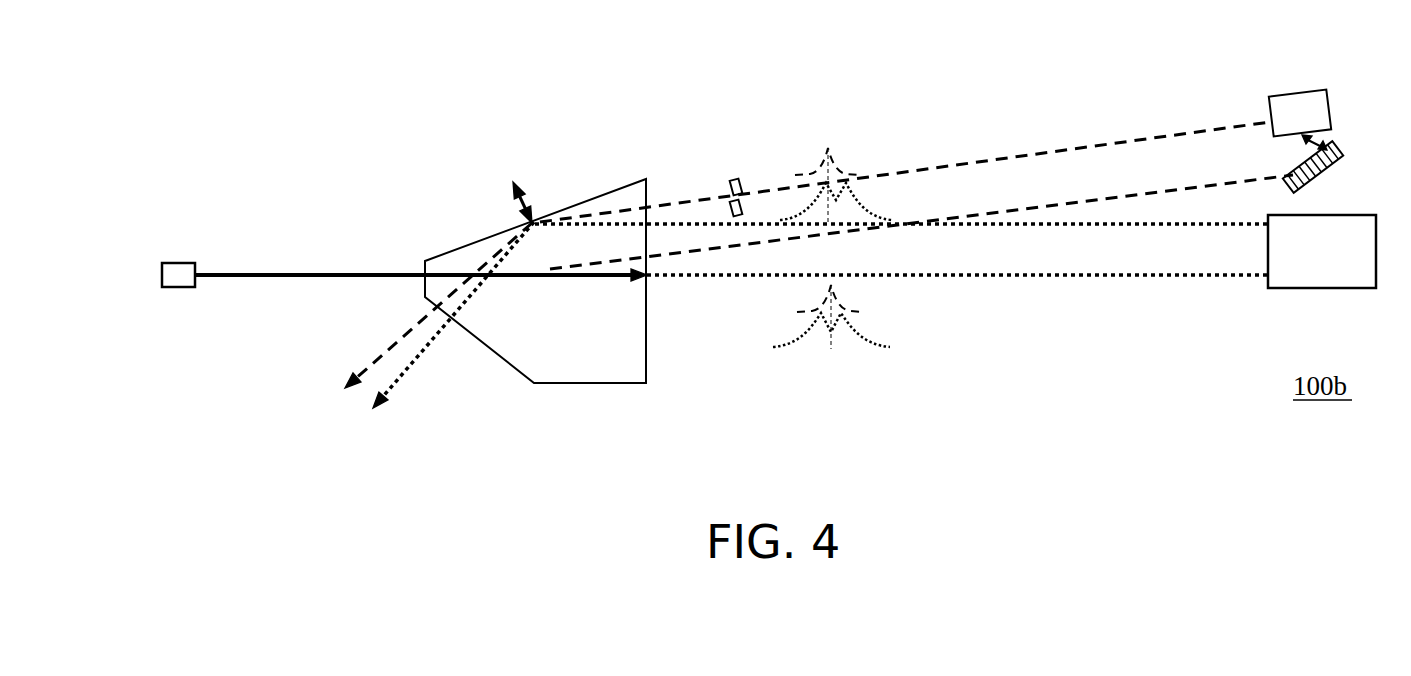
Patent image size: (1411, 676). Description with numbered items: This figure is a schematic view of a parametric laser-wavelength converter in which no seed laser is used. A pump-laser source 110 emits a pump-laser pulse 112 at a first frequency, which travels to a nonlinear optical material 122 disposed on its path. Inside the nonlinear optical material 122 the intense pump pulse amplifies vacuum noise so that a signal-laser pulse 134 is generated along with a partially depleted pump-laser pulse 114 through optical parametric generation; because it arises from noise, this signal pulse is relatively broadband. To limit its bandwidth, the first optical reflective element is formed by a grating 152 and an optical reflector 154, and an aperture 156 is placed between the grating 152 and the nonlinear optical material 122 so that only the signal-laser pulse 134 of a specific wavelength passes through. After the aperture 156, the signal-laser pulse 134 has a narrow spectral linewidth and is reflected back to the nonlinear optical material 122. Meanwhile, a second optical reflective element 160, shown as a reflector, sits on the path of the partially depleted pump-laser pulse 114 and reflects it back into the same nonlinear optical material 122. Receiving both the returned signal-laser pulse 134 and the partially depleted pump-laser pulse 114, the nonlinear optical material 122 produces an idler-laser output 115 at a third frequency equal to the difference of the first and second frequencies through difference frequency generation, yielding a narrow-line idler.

The pump-laser source 110 is at (162, 271).
The pump-laser pulse 112 is at (220, 272).
The partially depleted pump-laser pulse 114 is at (685, 277).
The idler-laser output 115 is at (525, 222).
The nonlinear optical material 122 is at (590, 199).
The signal-laser pulse 134 is at (1180, 184).
The grating 152 is at (1322, 173).
The optical reflector 154 is at (1300, 93).
The aperture 156 is at (733, 180).
The second optical reflective element 160 is at (1312, 288).